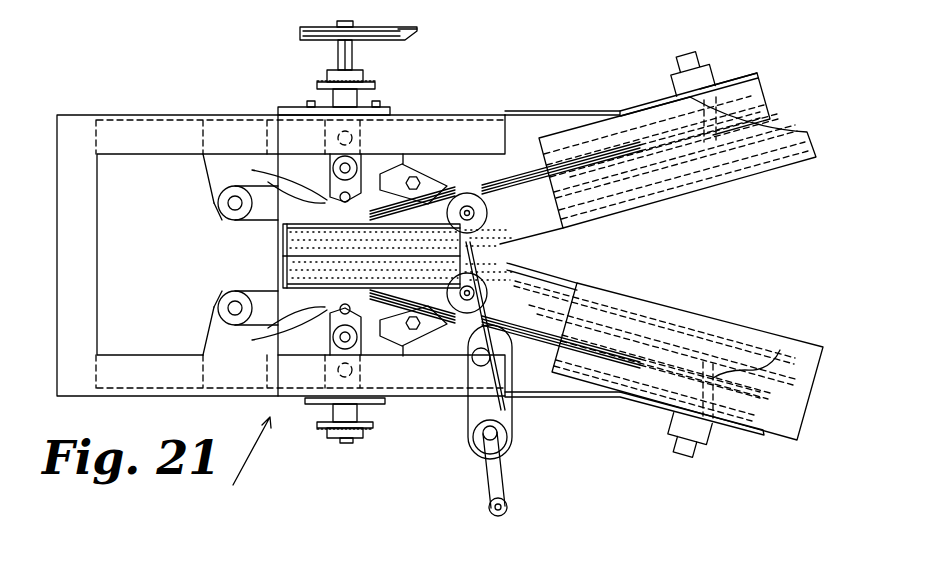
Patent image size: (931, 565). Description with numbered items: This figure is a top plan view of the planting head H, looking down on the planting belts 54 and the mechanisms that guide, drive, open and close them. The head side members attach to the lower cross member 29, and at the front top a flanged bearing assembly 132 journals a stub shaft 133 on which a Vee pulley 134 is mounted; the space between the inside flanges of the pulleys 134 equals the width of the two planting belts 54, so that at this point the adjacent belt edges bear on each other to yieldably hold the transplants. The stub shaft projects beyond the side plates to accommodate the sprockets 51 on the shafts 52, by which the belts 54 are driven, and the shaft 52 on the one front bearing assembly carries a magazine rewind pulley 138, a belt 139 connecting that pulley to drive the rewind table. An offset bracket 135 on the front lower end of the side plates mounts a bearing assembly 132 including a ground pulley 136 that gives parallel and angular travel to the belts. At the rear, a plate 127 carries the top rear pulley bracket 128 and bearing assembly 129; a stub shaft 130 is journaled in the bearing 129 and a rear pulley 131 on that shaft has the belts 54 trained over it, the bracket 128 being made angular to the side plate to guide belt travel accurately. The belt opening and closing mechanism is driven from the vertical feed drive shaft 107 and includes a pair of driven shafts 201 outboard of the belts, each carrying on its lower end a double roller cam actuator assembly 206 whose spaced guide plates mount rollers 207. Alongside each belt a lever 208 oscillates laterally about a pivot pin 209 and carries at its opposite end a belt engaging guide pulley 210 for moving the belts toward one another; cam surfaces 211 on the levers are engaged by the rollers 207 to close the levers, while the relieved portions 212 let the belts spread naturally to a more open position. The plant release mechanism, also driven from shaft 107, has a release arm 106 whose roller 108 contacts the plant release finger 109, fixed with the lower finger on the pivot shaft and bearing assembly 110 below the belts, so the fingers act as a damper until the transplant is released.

The lower head raising and lowering cross member 29 is at (148, 113).
The magazine rewind pulley 138 is at (300, 36).
The belt 139 is at (403, 32).
The shaft 52 is at (338, 56).
The planting head sprocket 51 is at (372, 82).
The flanged bearing assembly 132 is at (317, 406).
The stub shaft 133 is at (350, 442).
The pivot pin 209 is at (218, 205).
The driven shaft 201 is at (333, 183).
The double roller cam actuator assembly 206 is at (352, 166).
The roller 207 is at (270, 198).
The relieved portion 212 is at (283, 176).
The cam surface 211 is at (390, 170).
The ground pulley 136 is at (424, 182).
The lever 208 is at (347, 322).
The offset bracket 135 is at (293, 330).
The planting belt 54 is at (280, 246).
The Vee pulley 134 is at (282, 280).
The belt engaging guide pulley 210 is at (465, 220).
The bearing assembly 110 is at (508, 346).
The plant release finger 109 is at (496, 265).
The vertical feed drive shaft 107 is at (507, 432).
The release arm 106 is at (505, 478).
The roller 108 is at (507, 510).
The plate 127 is at (807, 430).
The rear pulley 131 is at (760, 353).
The bearing assembly 129 is at (720, 430).
The stub shaft 130 is at (687, 463).
The top rear pulley bracket 128 is at (661, 413).
The planting head H is at (242, 475).